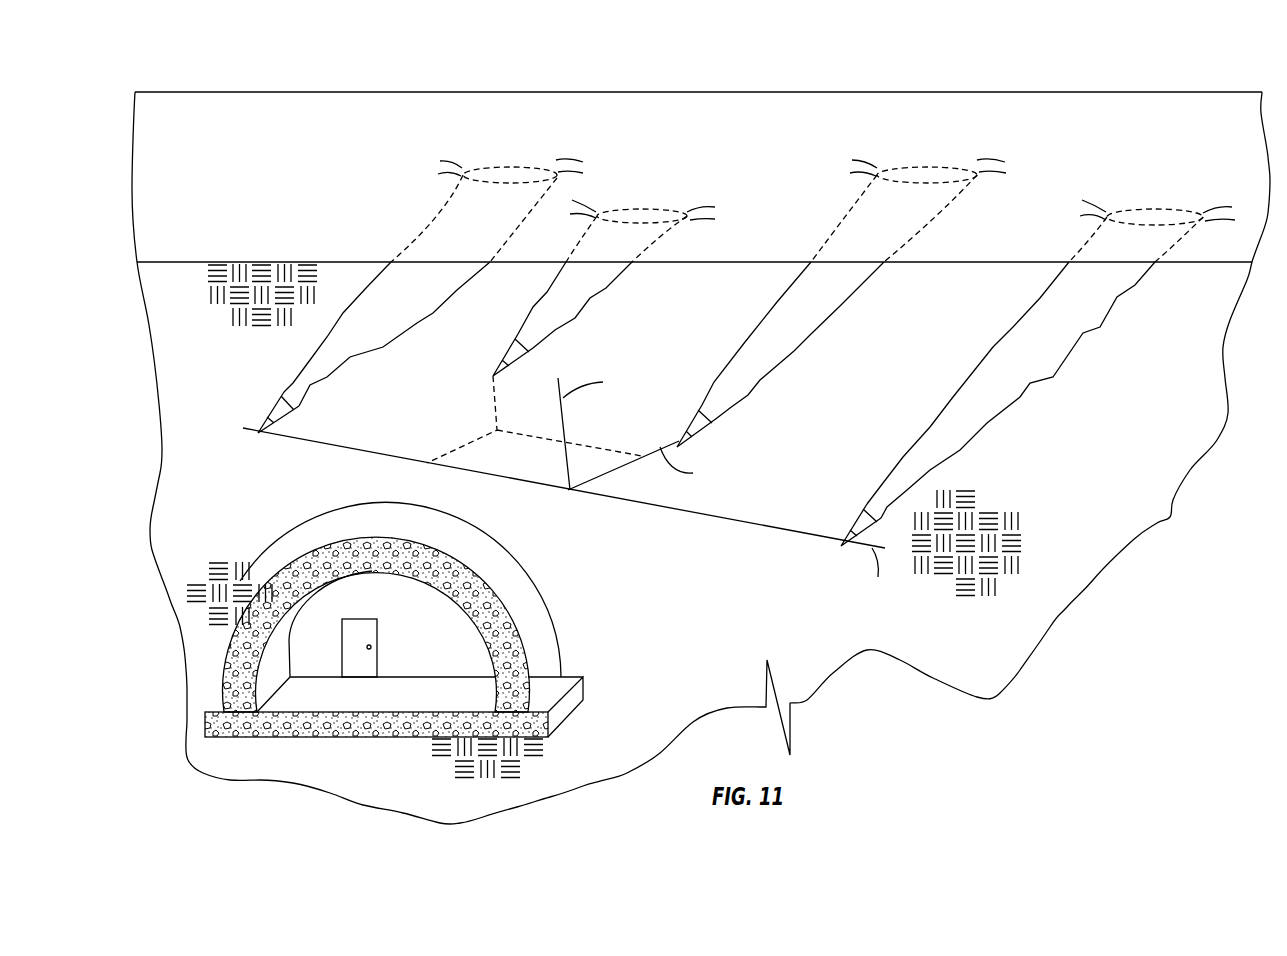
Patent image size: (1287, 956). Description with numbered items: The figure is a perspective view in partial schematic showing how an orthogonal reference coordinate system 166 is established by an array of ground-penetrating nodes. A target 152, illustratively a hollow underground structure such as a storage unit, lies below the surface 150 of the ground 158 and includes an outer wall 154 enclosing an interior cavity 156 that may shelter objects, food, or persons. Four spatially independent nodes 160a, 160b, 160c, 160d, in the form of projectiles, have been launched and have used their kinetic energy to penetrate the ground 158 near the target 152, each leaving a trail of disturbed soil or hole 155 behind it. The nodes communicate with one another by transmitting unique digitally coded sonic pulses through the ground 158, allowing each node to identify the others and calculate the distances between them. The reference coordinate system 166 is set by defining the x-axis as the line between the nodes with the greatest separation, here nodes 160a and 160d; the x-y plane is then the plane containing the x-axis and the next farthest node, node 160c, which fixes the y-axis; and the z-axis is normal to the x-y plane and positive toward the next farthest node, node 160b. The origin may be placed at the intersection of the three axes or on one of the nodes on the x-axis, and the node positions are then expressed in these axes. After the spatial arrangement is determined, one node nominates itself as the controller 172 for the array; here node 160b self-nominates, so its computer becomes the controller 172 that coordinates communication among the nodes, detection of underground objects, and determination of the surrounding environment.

The surface 150 is at (798, 171).
The target 152 is at (573, 639).
The outer wall 154 is at (340, 550).
The hole 155 is at (547, 292).
The interior cavity 156 is at (443, 610).
The ground 158 is at (245, 290).
The node 160a is at (306, 409).
The node 160b is at (538, 350).
The node 160c is at (712, 420).
The node 160d is at (863, 512).
The reference coordinate system 166 is at (570, 490).
The controller 172 is at (503, 357).